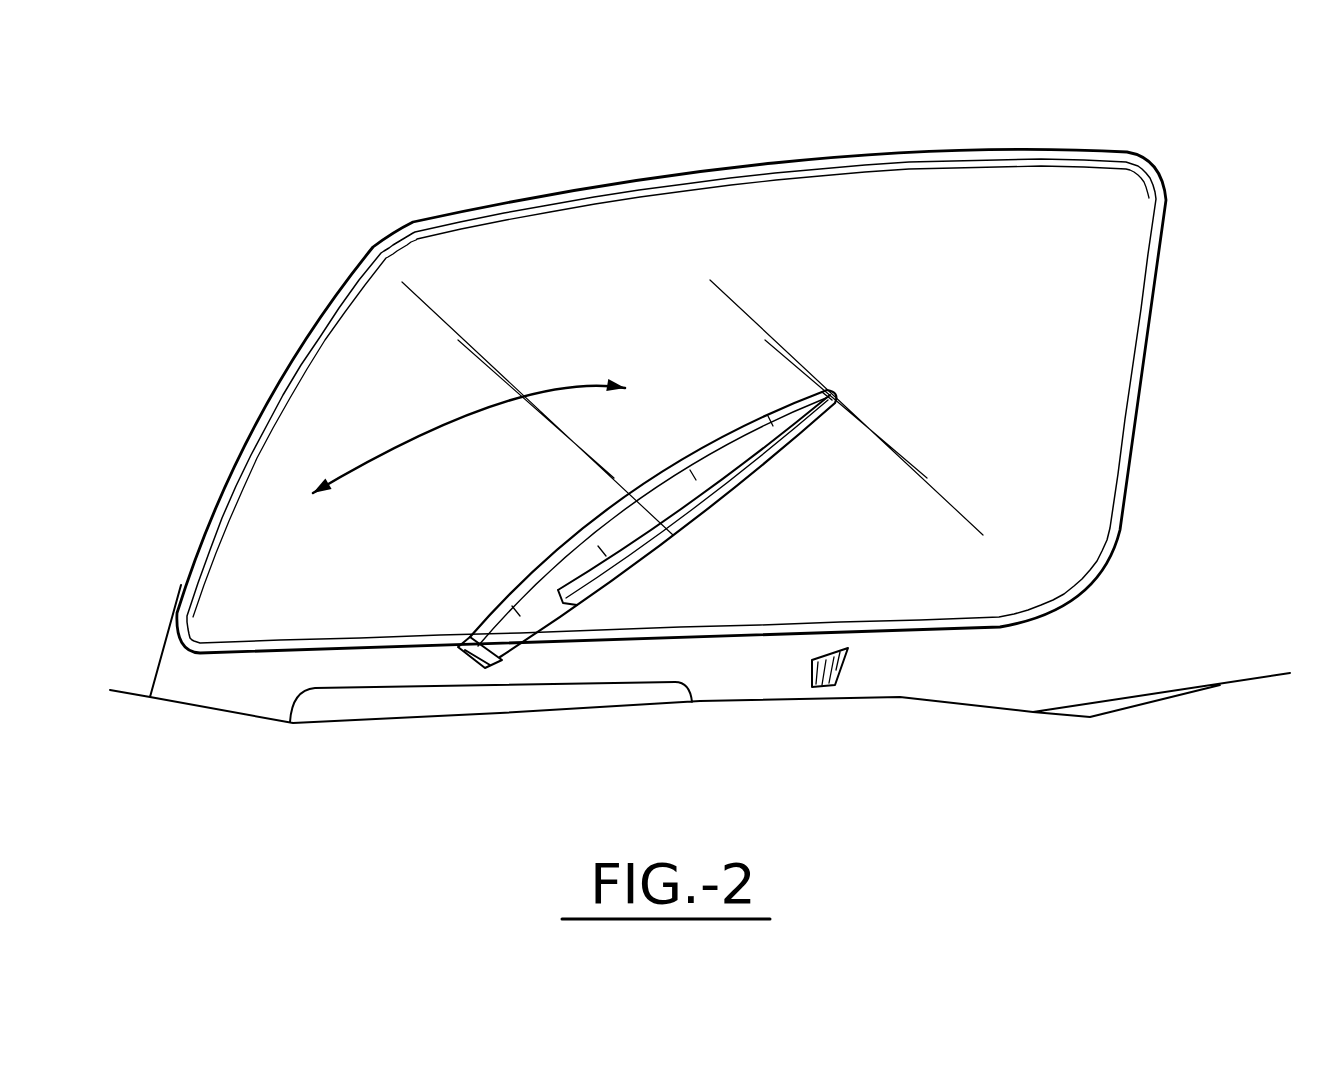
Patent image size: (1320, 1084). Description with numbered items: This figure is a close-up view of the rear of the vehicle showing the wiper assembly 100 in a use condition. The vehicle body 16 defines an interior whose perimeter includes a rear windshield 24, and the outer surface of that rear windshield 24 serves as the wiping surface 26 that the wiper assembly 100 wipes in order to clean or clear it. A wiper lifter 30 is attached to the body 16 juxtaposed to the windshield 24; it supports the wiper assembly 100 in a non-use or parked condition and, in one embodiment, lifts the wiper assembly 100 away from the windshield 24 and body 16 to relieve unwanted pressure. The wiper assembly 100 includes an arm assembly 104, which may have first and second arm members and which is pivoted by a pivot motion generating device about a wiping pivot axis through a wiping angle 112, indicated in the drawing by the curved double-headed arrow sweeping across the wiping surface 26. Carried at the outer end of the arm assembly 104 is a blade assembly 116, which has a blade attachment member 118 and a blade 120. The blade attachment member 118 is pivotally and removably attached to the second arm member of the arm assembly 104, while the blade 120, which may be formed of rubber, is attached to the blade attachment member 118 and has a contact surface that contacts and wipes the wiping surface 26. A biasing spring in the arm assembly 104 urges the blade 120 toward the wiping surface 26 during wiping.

The wiper assembly 100 is at (614, 441).
The rear windshield 24 is at (1020, 188).
The wiping surface 26 is at (502, 511).
The body 16 is at (1133, 660).
The wiper lifter 30 is at (840, 667).
The wiping angle 112 is at (462, 414).
The blade attachment member 118 is at (717, 440).
The blade 120 is at (770, 440).
The blade assembly 116 is at (860, 375).
The arm assembly 104 is at (457, 640).